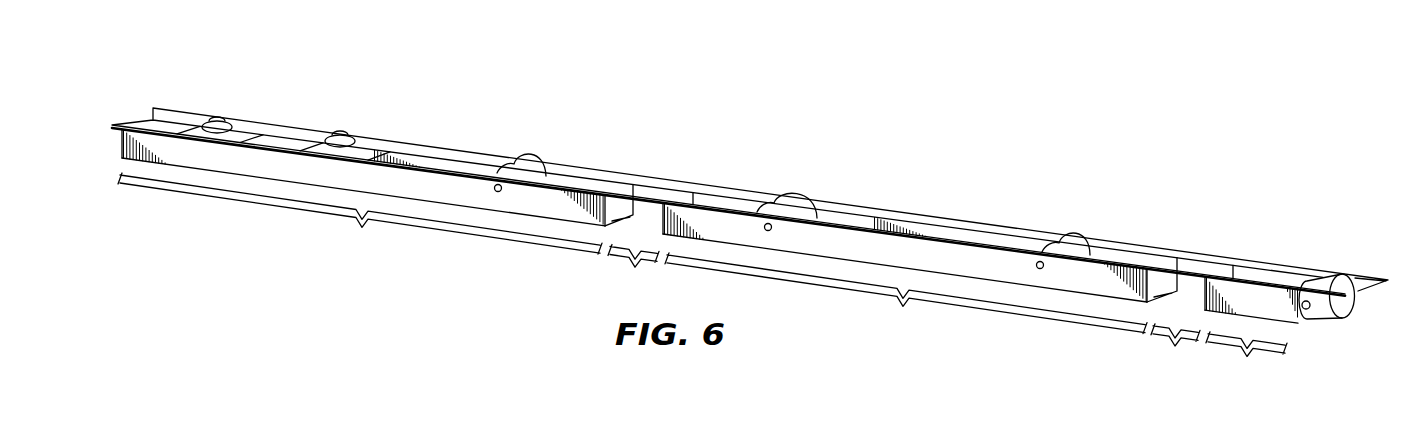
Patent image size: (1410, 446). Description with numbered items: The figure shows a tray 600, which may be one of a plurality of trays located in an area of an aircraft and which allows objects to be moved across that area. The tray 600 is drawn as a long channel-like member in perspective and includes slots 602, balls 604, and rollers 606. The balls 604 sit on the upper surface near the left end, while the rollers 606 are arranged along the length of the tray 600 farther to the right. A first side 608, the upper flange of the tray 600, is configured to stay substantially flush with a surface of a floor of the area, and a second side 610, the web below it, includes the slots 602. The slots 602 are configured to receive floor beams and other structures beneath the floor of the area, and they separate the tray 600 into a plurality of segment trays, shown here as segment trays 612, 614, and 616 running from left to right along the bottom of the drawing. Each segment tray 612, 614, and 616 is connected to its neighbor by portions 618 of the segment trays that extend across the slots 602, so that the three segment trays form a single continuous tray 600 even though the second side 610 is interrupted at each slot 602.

The tray 600 is at (782, 88).
The slots 602 is at (904, 310).
The balls 604 is at (216, 116).
The rollers 606 is at (795, 203).
The first side 608 is at (118, 123).
The second side 610 is at (120, 149).
The segment tray 612 is at (360, 215).
The segment tray 614 is at (906, 293).
The segment tray 616 is at (1246, 357).
The portions 618 is at (665, 168).